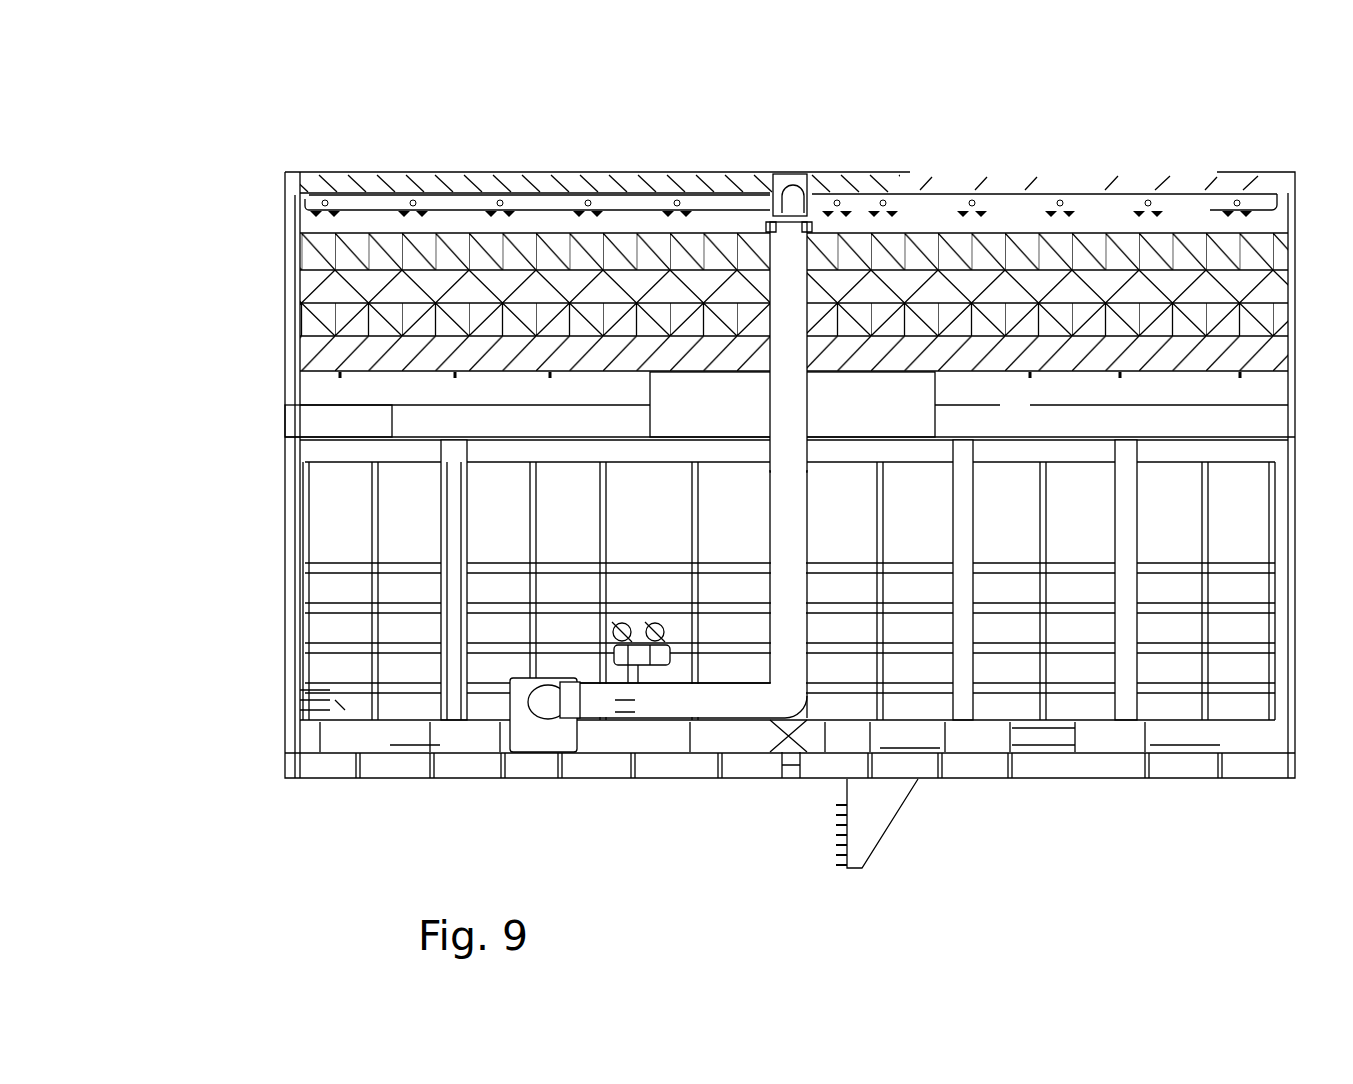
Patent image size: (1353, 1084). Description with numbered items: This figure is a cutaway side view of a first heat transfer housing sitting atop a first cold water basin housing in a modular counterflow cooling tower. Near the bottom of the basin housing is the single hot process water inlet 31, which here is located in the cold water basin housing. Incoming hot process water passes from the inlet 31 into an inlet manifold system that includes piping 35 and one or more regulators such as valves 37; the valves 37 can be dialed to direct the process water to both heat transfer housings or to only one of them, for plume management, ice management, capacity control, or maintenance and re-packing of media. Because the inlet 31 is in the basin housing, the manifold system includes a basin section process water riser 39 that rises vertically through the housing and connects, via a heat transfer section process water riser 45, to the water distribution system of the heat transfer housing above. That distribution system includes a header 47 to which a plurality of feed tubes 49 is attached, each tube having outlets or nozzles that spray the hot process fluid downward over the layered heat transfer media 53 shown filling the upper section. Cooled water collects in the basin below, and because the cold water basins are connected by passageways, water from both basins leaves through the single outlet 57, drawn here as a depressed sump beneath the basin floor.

The single hot process water inlet 31 is at (543, 745).
The piping 35 is at (704, 700).
The valves 37 is at (635, 700).
The basin section process water risers 39 is at (797, 530).
The heat transfer section process water riser 45 is at (787, 308).
The header 47 is at (777, 172).
The feed tubes 49 is at (368, 198).
The heat transfer media 53 is at (393, 303).
The single outlet 57 is at (1029, 829).